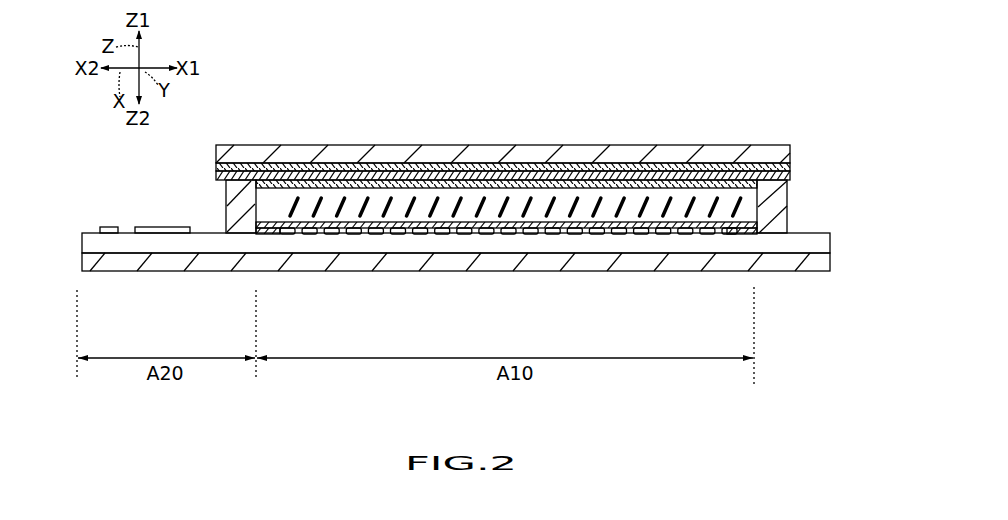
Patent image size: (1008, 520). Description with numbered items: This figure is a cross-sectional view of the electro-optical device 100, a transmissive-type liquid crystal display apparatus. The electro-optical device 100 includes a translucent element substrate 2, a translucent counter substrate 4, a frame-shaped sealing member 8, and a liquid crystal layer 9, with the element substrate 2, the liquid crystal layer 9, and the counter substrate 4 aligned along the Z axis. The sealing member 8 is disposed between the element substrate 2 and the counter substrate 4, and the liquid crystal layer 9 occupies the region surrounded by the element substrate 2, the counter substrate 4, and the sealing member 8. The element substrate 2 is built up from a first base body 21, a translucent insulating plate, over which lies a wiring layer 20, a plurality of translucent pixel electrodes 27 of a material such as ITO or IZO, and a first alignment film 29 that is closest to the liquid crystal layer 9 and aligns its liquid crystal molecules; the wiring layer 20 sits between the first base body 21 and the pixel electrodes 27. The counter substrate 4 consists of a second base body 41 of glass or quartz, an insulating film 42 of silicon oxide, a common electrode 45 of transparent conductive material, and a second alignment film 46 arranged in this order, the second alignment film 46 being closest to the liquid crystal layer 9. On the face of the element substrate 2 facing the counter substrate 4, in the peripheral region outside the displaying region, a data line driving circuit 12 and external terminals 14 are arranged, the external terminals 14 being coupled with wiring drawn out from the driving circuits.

The electro-optical device 100 is at (805, 117).
The counter substrate 4 is at (746, 144).
The second base body 41 is at (262, 160).
The insulating film 42 is at (310, 170).
The common electrode 45 is at (346, 178).
The second alignment film 46 is at (382, 184).
The sealing member 8 is at (762, 210).
The liquid crystal layer 9 is at (748, 205).
The first alignment film 29 is at (274, 238).
The pixel electrodes 27 is at (455, 236).
The element substrate 2 is at (803, 276).
The wiring layer 20 is at (364, 244).
The first base body 21 is at (411, 262).
The external terminals 14 is at (114, 226).
The data line driving circuit 12 is at (171, 226).